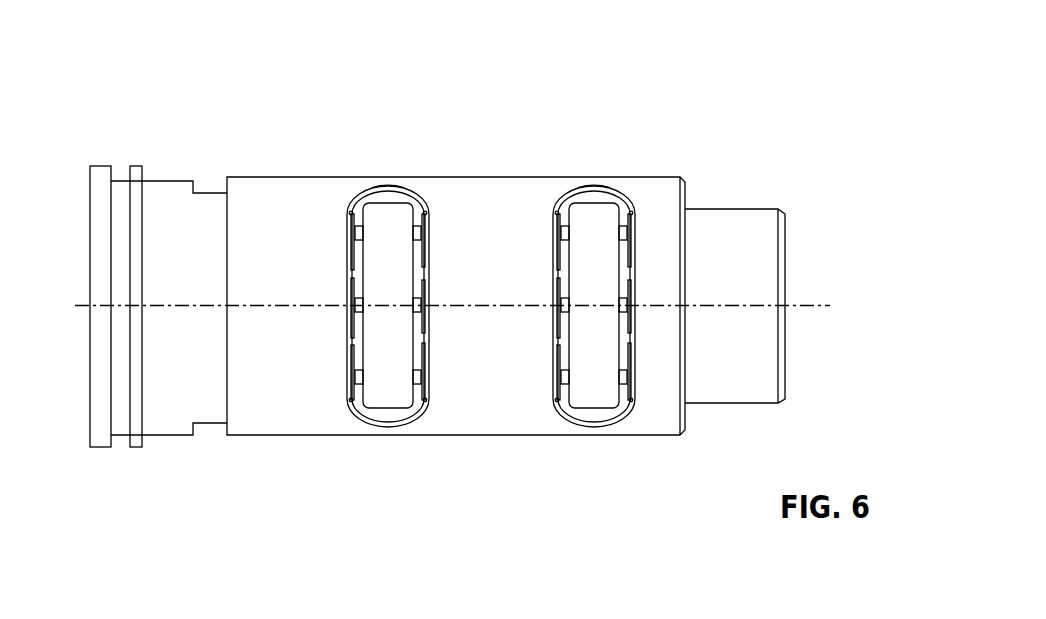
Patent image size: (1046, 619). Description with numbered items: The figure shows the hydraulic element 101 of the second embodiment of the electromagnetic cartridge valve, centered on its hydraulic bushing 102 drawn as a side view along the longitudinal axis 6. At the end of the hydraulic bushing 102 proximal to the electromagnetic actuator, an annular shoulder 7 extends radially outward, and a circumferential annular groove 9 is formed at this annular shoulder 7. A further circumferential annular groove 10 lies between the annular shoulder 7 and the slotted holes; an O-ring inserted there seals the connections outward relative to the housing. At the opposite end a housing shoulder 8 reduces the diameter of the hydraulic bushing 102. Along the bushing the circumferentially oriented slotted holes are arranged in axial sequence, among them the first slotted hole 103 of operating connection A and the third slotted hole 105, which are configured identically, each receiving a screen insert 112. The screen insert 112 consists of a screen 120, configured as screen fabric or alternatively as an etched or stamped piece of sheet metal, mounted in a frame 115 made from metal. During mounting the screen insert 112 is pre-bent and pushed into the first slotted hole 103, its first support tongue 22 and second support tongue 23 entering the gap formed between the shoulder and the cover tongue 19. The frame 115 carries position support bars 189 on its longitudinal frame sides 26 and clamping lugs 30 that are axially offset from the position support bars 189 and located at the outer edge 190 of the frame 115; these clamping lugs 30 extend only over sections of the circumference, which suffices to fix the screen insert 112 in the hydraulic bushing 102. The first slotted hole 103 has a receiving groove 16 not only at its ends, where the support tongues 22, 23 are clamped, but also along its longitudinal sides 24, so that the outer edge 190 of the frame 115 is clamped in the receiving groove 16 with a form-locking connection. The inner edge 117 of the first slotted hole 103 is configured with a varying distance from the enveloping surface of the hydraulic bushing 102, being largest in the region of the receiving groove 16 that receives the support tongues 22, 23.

The longitudinal axis 6 is at (823, 302).
The annular shoulder 7 is at (100, 176).
The housing shoulder 8 is at (690, 200).
The circumferential annular groove 9 is at (121, 181).
The circumferential annular groove 10 is at (207, 192).
The receiving groove 16 is at (352, 196).
The cover tongue 19 is at (412, 427).
The first support tongue 22 is at (400, 196).
The second support tongue 23 is at (380, 422).
The longitudinal side 24 is at (352, 287).
The longitudinal frame side 26 is at (351, 250).
The clamping lug 30 is at (352, 340).
The hydraulic element 101 is at (712, 100).
The hydraulic bushing 102 is at (275, 165).
The first slotted hole 103 is at (430, 180).
The third slotted hole 105 is at (634, 182).
The screen insert 112 is at (389, 172).
The frame 115 is at (424, 254).
The inner edge 117 is at (416, 342).
The screen 120 is at (405, 290).
The position support bar 189 is at (352, 380).
The outer edge 190 is at (426, 289).